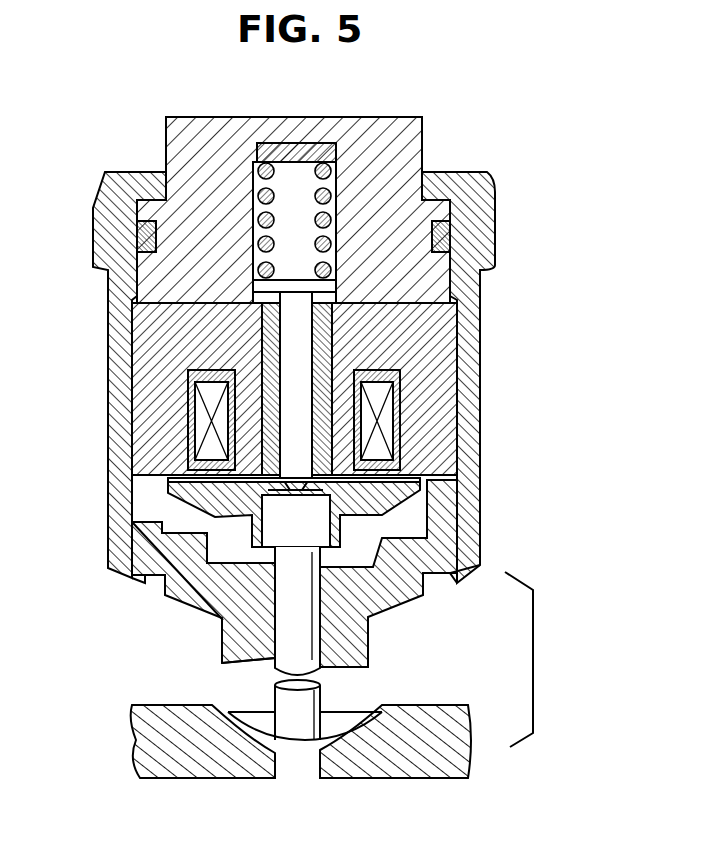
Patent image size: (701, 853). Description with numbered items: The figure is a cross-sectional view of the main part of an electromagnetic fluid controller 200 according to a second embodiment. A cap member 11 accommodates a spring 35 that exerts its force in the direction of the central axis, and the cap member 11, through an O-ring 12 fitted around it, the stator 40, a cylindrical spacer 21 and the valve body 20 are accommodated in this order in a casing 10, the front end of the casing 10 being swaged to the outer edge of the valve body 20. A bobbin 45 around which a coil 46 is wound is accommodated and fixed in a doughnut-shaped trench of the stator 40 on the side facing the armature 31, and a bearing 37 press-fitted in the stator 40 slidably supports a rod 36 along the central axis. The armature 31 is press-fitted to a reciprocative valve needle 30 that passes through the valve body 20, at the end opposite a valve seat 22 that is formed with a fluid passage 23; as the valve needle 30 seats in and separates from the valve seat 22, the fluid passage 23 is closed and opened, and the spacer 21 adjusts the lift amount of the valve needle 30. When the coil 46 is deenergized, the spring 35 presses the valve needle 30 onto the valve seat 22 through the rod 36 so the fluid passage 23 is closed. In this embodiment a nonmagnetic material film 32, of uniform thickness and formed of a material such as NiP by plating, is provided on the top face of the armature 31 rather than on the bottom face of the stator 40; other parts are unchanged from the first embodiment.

The electromagnetic fluid controller 200 is at (122, 128).
The casing 10 is at (487, 192).
The cap member 11 is at (205, 117).
The O-ring 12 is at (450, 235).
The spring 35 is at (333, 182).
The bearing 37 is at (330, 316).
The rod 36 is at (300, 348).
The bobbin 45 is at (390, 370).
The coil 46 is at (380, 398).
The stator 40 is at (443, 435).
The nonmagnetic material film 32 is at (167, 478).
The armature 31 is at (420, 486).
The spacer 21 is at (448, 507).
The valve needle 30 is at (305, 612).
The valve body 20 is at (350, 642).
The fluid passage 23 is at (292, 767).
The valve seat 22 is at (311, 745).